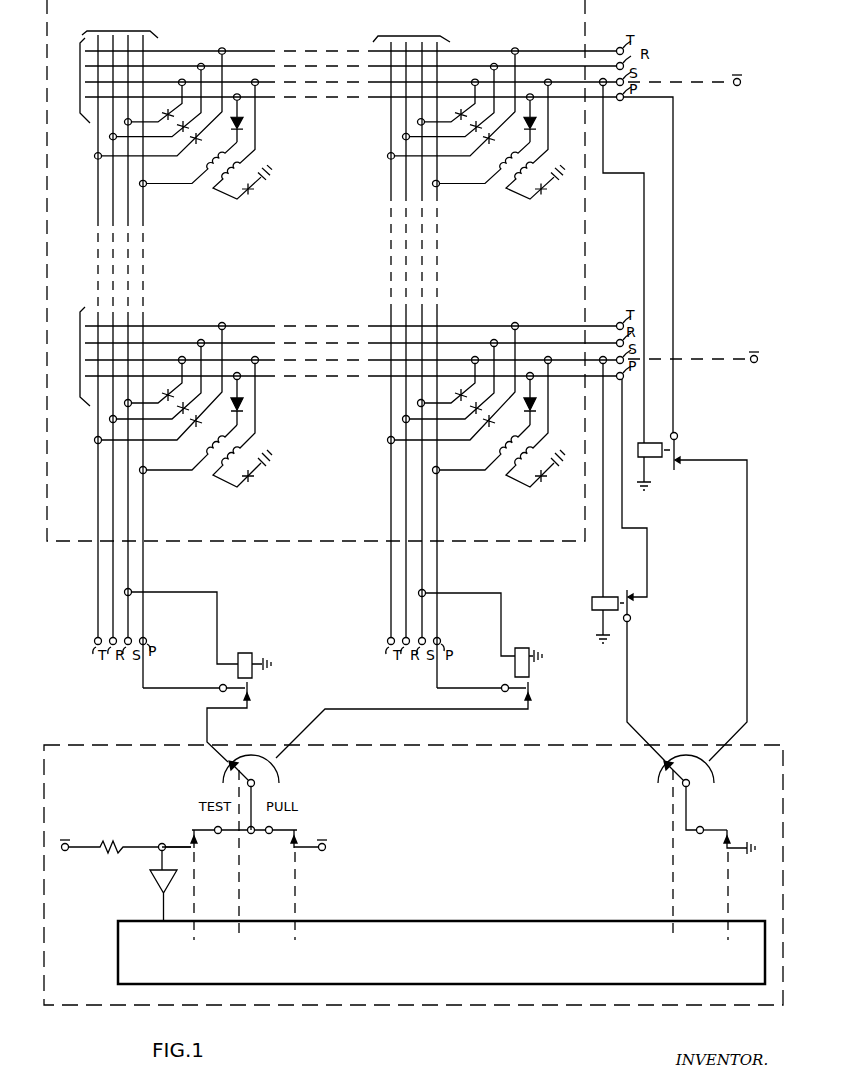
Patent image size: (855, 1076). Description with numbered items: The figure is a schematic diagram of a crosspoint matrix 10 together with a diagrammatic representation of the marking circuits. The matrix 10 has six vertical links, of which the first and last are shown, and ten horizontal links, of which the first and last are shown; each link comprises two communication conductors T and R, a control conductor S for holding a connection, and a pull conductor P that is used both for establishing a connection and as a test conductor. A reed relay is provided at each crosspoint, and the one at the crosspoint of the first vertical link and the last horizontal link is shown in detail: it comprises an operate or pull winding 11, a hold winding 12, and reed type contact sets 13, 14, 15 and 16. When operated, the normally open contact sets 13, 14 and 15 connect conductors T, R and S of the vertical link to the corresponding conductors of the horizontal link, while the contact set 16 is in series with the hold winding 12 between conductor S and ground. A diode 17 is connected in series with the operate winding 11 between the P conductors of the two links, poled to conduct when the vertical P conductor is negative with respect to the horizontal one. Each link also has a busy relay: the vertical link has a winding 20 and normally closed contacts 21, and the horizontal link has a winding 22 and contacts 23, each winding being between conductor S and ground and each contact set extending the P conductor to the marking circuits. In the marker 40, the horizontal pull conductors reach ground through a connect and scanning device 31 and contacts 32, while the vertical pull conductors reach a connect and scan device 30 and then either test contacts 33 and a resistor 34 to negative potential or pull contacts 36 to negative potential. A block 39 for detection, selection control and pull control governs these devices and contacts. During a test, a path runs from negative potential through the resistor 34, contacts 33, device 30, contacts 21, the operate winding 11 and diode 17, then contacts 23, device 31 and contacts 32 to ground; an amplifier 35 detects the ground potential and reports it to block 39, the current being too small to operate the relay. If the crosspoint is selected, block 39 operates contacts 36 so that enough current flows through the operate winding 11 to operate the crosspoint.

The crosspoint matrix 10 is at (314, 344).
The operate winding 11 is at (206, 448).
The hold winding 12 is at (217, 470).
The reed type contact set 13 is at (164, 395).
The reed type contact set 14 is at (181, 404).
The reed type contact set 15 is at (190, 422).
The reed type contact set 16 is at (248, 484).
The diode 17 is at (232, 408).
The busy relay winding 20 is at (252, 640).
The busy relay contacts 21 is at (251, 691).
The busy relay winding 22 is at (595, 597).
The busy relay contacts 23 is at (633, 583).
The connect and scan circuit device 30 is at (282, 772).
The connect and scanning circuit device 31 is at (712, 778).
The contacts 32 is at (731, 838).
The test contacts 33 is at (190, 830).
The resistor 34 is at (117, 838).
The amplifier 35 is at (150, 880).
The pull contacts 36 is at (298, 830).
The detection, selection control, and pull control block 39 is at (440, 921).
The marker 40 is at (418, 745).